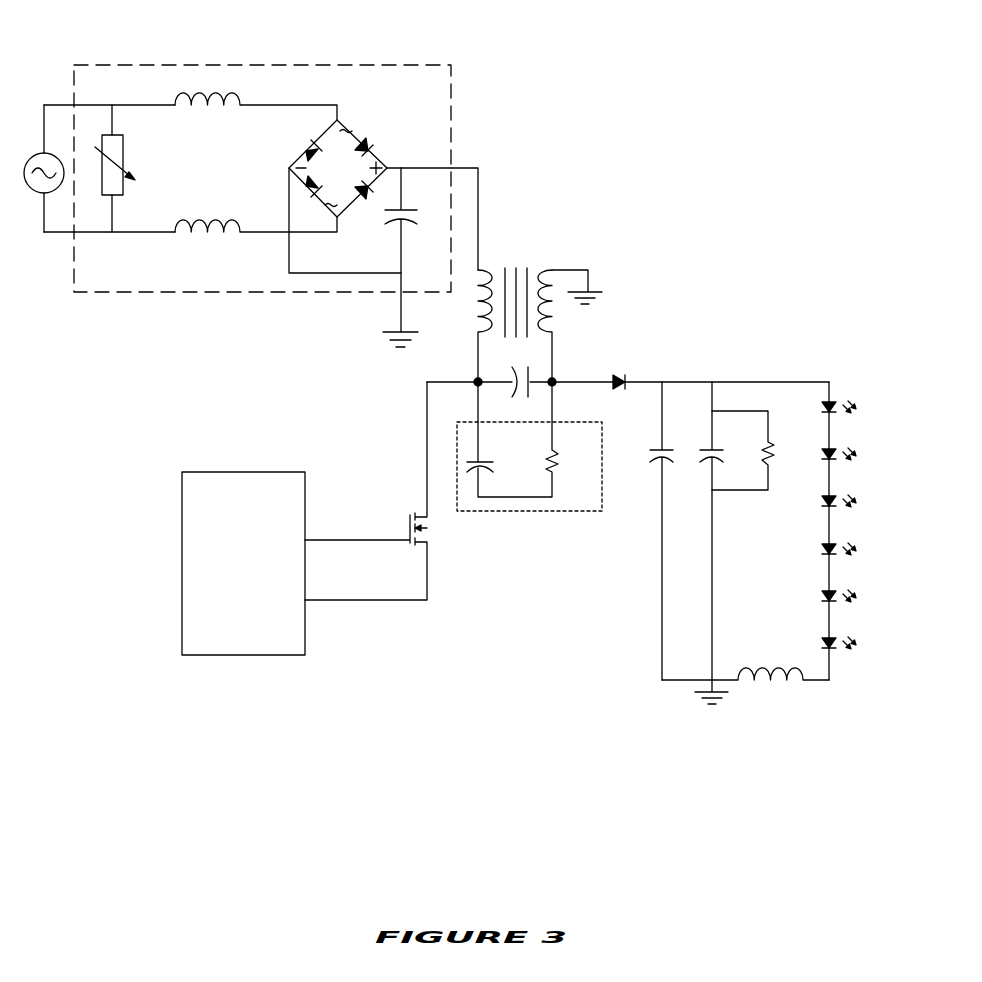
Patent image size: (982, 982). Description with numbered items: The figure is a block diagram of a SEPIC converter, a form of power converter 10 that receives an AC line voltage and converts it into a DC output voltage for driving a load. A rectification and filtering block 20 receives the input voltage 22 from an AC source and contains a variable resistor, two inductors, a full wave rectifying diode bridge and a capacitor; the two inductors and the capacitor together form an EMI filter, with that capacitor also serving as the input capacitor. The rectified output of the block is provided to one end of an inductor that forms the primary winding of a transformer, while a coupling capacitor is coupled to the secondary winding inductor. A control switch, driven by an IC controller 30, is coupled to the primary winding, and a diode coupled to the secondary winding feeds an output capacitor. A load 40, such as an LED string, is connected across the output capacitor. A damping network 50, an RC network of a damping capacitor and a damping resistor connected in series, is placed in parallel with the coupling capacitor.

The power converter 10 is at (483, 106).
The rectification and filtering block 20 is at (320, 63).
The input voltage 22 is at (38, 154).
The IC controller 30 is at (243, 563).
The load 40 is at (848, 523).
The damping network 50 is at (532, 511).